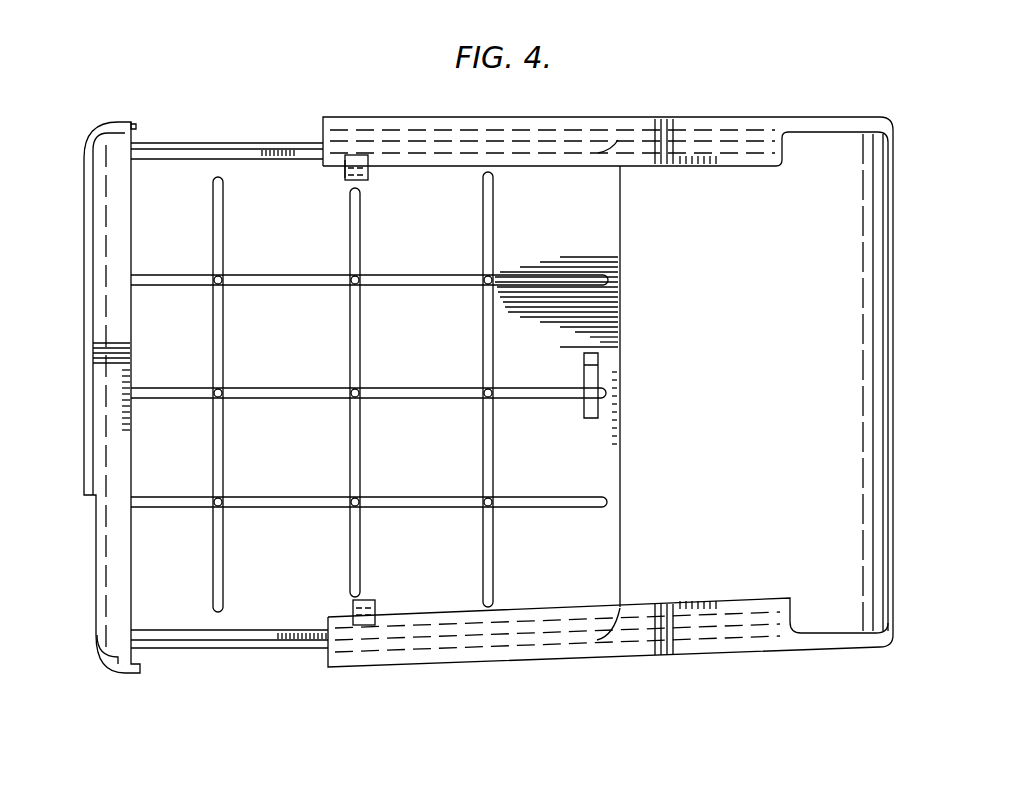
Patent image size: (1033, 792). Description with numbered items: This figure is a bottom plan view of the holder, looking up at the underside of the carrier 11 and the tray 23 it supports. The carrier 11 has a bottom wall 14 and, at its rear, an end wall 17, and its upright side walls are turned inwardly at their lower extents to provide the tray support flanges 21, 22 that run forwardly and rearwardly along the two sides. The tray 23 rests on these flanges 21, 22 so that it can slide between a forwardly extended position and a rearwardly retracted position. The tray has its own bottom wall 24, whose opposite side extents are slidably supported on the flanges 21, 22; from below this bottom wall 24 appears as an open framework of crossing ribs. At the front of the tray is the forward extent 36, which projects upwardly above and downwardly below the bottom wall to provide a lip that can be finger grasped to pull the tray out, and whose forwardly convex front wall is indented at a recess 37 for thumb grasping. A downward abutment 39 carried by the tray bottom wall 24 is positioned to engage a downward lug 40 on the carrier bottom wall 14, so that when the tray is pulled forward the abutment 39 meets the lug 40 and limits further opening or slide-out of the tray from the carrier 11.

The carrier 11 is at (814, 104).
The bottom wall 14 is at (613, 386).
The end wall 17 is at (893, 292).
The tray support flange 21 is at (680, 650).
The tray support flange 22 is at (703, 117).
The tray 23 is at (245, 140).
The bottom wall 24 is at (369, 392).
The forward extent 36 is at (73, 153).
The recess 37 is at (97, 544).
The downward abutment 39 is at (358, 155).
The downward lug 40 is at (340, 160).